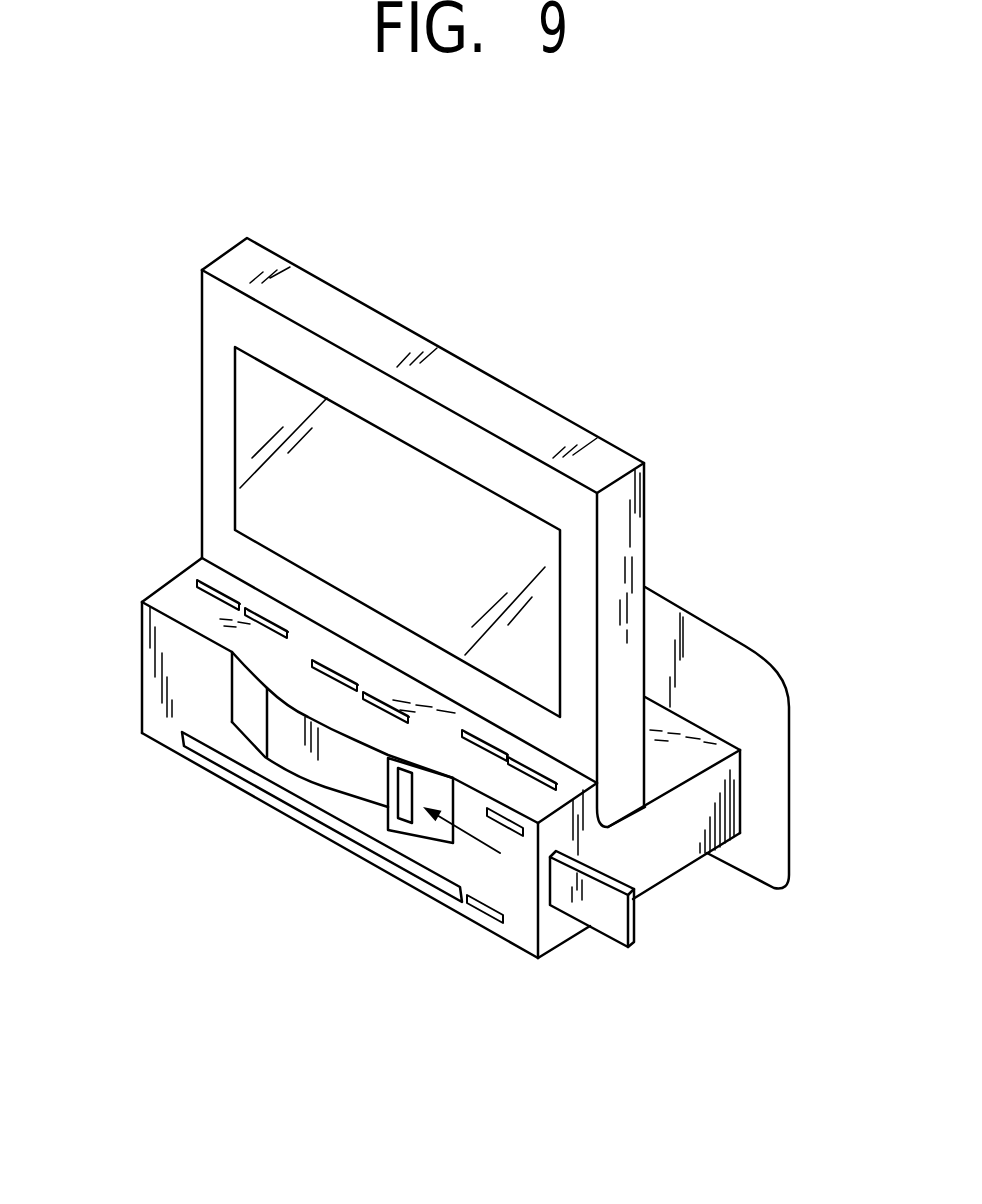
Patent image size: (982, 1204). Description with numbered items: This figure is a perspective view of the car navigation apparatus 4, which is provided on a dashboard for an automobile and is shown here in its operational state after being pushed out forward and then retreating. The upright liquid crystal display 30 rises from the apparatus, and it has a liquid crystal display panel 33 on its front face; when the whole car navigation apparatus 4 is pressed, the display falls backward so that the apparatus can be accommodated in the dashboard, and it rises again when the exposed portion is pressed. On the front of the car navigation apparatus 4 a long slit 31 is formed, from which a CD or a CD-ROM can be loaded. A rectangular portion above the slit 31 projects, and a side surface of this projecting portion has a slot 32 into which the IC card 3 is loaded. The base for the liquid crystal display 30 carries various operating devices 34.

The IC card 3 is at (608, 918).
The car navigation apparatus 4 is at (729, 956).
The liquid crystal display 30 is at (643, 537).
The slit 31 is at (293, 798).
The slot 32 is at (397, 800).
The liquid crystal display panel 33 is at (273, 410).
The operating devices 34 is at (214, 549).